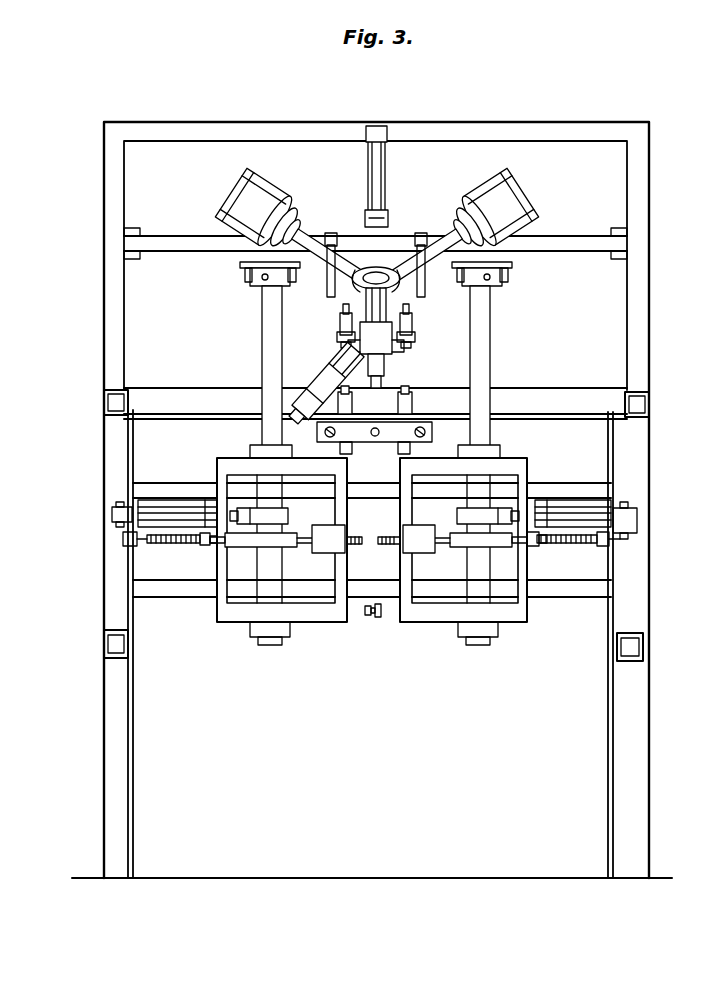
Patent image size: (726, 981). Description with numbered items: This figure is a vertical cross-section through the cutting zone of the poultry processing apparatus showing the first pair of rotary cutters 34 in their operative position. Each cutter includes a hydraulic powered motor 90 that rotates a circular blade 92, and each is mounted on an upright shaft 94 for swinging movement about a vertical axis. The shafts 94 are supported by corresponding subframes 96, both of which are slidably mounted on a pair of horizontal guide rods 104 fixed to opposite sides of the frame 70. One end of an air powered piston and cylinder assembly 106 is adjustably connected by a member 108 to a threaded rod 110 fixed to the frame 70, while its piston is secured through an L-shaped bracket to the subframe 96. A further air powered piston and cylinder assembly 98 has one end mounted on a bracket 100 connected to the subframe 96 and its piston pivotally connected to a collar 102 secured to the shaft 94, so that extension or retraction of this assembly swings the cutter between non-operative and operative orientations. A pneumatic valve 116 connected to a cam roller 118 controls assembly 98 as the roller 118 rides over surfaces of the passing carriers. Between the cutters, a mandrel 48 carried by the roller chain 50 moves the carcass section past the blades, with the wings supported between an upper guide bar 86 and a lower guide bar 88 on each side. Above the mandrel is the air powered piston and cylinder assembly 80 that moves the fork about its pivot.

The first pair of rotary cutters 34 is at (276, 162).
The mandrel 48 is at (413, 305).
The roller chain 50 is at (366, 614).
The frame 70 is at (650, 718).
The air powered piston and cylinder assembly 80 is at (360, 208).
The upper guide bar 86 is at (330, 291).
The lower guide bar 88 is at (341, 320).
The hydraulic powered motor 90 is at (243, 194).
The circular blade 92 is at (397, 266).
The shaft 94 is at (262, 357).
The subframe 96 is at (448, 628).
The air powered piston and cylinder assembly 98 is at (167, 492).
The bracket 100 is at (113, 520).
The collar 102 is at (289, 513).
The horizontal guide rods 104 is at (543, 488).
The air powered piston and cylinder assembly 106 is at (274, 556).
The member 108 is at (212, 547).
The threaded rod 110 is at (157, 547).
The pneumatic valve 116 is at (331, 380).
The cam roller 118 is at (347, 352).